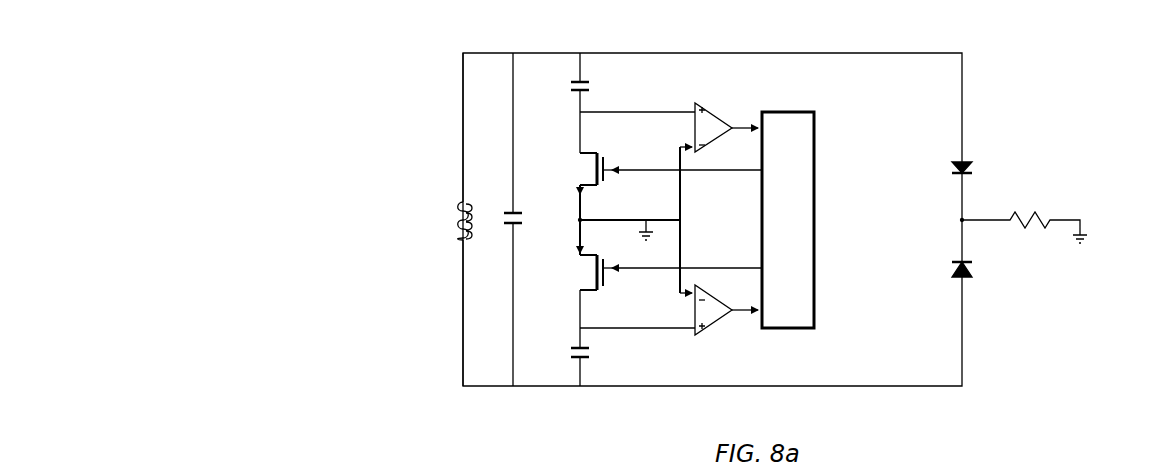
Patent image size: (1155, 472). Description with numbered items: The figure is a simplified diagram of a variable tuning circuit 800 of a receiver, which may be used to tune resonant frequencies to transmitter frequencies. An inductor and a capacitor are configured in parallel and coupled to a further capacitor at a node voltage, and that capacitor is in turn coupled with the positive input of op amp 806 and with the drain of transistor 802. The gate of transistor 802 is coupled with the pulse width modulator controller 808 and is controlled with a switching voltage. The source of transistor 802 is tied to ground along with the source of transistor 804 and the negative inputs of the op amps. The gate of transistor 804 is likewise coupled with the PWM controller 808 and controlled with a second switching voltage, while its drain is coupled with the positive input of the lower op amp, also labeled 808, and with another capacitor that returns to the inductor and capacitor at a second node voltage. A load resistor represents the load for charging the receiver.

The variable tuning circuit 800 is at (258, 67).
The transistor 802 is at (652, 173).
The transistor 804 is at (654, 267).
The op amp 806 is at (726, 116).
The pulse width modulator (PWM) controller 808 is at (755, 225).